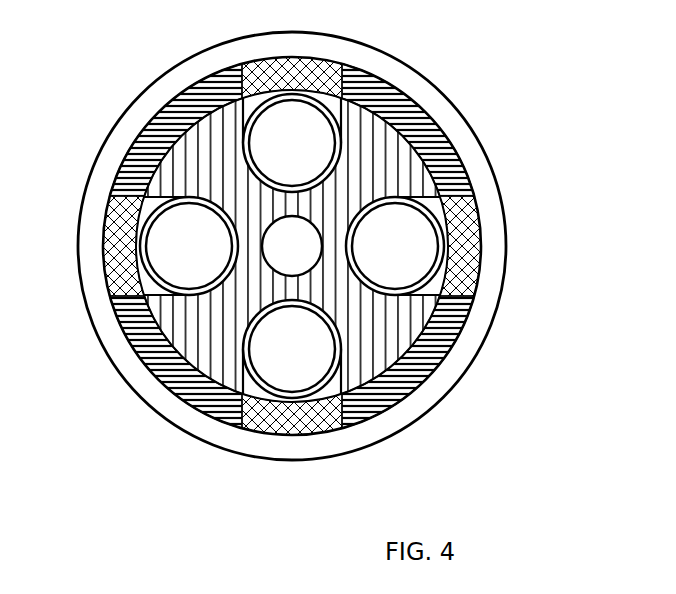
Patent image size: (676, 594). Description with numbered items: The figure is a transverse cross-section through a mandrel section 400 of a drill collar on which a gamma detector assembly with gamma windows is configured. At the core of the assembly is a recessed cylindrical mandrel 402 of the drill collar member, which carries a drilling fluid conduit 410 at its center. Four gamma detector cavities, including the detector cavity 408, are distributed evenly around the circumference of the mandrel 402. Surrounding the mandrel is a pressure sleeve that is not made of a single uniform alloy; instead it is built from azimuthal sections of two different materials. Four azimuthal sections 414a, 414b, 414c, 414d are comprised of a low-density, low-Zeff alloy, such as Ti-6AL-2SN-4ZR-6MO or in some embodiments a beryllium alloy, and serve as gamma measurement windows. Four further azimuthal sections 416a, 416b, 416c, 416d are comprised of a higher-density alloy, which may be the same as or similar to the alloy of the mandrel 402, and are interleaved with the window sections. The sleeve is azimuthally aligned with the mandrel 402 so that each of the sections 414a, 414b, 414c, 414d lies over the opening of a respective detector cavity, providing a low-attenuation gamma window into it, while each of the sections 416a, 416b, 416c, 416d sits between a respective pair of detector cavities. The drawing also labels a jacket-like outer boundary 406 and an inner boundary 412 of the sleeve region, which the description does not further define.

The mandrel section 400 is at (52, 92).
The recessed cylindrical mandrel 402 is at (193, 328).
The cable jacket 406 is at (450, 128).
The detector cavity 408 is at (402, 187).
The drilling fluid conduit 410 is at (305, 257).
The inner layer boundary 412 is at (185, 403).
The azimuthal section 414a is at (185, 100).
The azimuthal section 414b is at (375, 97).
The azimuthal section 414c is at (405, 393).
The azimuthal section 414d is at (198, 404).
The azimuthal section 416a is at (298, 58).
The azimuthal section 416b is at (481, 228).
The azimuthal section 416c is at (277, 435).
The azimuthal section 416d is at (102, 247).